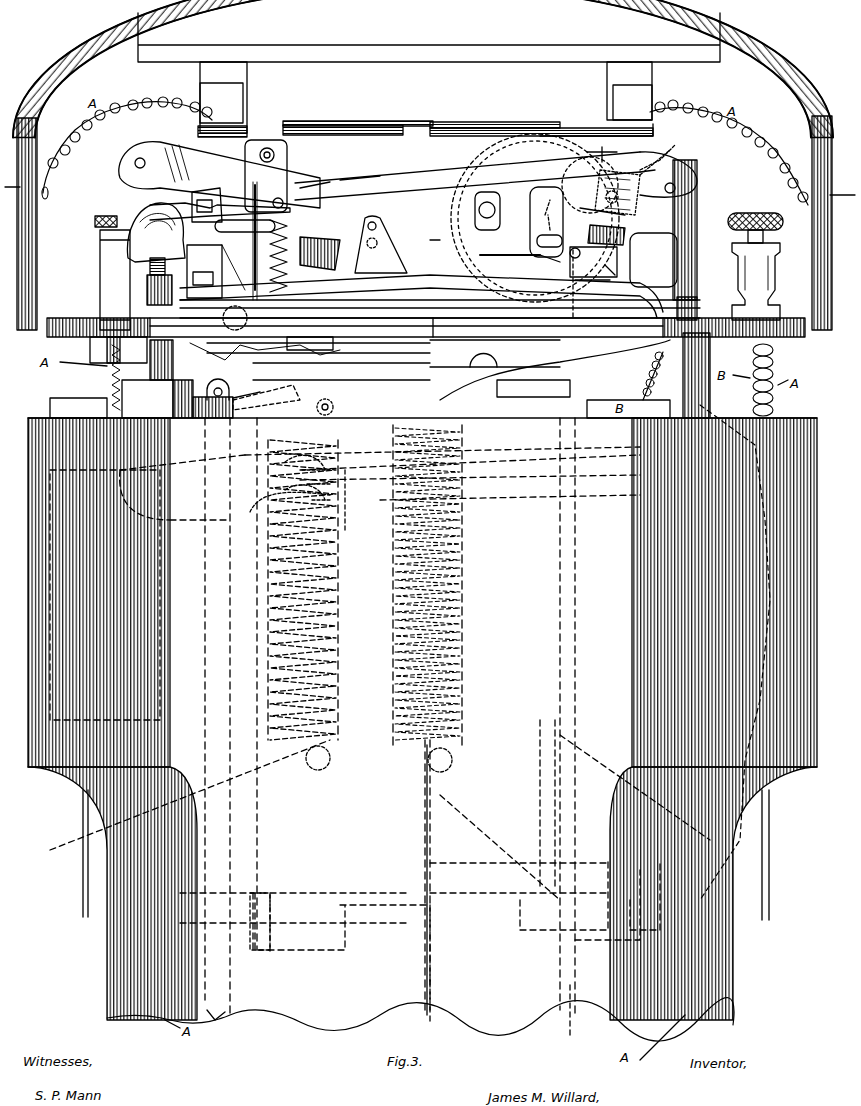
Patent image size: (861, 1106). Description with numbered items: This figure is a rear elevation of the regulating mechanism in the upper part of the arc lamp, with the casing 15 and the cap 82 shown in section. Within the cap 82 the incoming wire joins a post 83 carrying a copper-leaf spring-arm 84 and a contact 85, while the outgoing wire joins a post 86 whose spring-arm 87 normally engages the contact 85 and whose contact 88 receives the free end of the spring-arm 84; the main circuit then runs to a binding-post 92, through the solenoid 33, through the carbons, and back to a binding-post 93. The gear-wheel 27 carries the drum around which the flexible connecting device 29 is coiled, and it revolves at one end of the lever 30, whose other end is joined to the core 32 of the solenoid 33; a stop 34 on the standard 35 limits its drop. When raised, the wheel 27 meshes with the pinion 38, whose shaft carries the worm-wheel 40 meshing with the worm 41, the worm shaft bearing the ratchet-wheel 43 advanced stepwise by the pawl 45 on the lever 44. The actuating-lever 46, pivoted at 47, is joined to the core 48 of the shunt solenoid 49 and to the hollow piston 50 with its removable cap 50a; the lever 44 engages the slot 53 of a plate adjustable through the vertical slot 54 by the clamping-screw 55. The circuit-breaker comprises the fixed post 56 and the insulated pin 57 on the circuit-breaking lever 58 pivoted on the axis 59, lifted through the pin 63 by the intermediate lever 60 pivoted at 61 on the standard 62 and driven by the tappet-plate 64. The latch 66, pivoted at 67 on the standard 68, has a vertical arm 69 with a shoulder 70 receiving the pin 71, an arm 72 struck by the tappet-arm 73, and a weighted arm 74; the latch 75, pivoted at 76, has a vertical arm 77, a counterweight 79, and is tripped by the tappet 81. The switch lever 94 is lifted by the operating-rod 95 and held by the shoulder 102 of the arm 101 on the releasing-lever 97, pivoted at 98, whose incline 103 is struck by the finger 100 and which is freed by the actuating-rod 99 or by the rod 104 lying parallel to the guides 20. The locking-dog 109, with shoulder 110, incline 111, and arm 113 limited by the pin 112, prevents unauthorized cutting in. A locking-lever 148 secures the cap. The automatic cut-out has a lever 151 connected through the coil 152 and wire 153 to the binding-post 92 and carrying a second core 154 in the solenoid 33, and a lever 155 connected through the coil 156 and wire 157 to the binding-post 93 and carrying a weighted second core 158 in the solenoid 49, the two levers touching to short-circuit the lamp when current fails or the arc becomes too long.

The casing 15 is at (730, 960).
The vertical guides 20 is at (425, 990).
The gear-wheel 27 is at (452, 163).
The flexible connecting device 29 is at (433, 1028).
The lever 30 is at (345, 183).
The solenoid core 32 is at (118, 170).
The solenoid 33 is at (72, 408).
The stop 34 is at (285, 152).
The standard 35 is at (312, 184).
The pinion 38 is at (640, 165).
The worm-wheel 40 is at (650, 165).
The worm 41 is at (653, 260).
The ratchet-wheel 43 is at (593, 262).
The lever 44 is at (543, 262).
The pawl 45 is at (563, 172).
The actuating-lever 46 is at (690, 180).
The pivot 47 is at (381, 244).
The solenoid core 48 is at (697, 205).
The solenoid 49 is at (598, 400).
The piston 50 is at (162, 399).
The removable cap 50a is at (147, 399).
The slot 53 is at (537, 243).
The vertical slot 54 is at (500, 200).
The clamping-screw 55 is at (530, 218).
The fixed plate or post 56 is at (203, 286).
The insulated pin 57 is at (222, 262).
The circuit-breaking lever 58 is at (305, 256).
The axis 59 is at (378, 215).
The intermediate lever 60 is at (380, 182).
The pivot 61 is at (278, 200).
The standard 62 is at (281, 200).
The pin or arm 63 is at (439, 233).
The tappet-plate 64 is at (617, 192).
The latch 66 is at (606, 235).
The pivot 67 is at (570, 256).
The standard 68 is at (592, 273).
The vertical arm 69 is at (602, 212).
The shoulder 70 is at (609, 193).
The pin 71 is at (588, 152).
The latch arm 72 is at (505, 255).
The tappet-arm 73 is at (490, 233).
The weighted arm 74 is at (614, 263).
The latch 75 is at (245, 225).
The pivot 76 is at (233, 270).
The vertical arm 77 is at (252, 192).
The counterweight 79 is at (252, 300).
The tappet 81 is at (222, 230).
The cap 82 is at (125, 25).
The block or post 83 is at (222, 117).
The spring-arm 84 is at (270, 127).
The contact 85 is at (328, 122).
The post 86 is at (606, 120).
The spring-arm 87 is at (580, 130).
The contact 88 is at (553, 120).
The binding-post 92 is at (100, 214).
The binding-post 93 is at (758, 210).
The lever 94 is at (185, 522).
The operating-rod 95 is at (82, 815).
The releasing-lever 97 is at (600, 482).
The pivot 98 is at (335, 405).
The actuating-rod 99 is at (770, 808).
The finger 100 is at (340, 535).
The arm 101 is at (330, 470).
The shoulder 102 is at (330, 482).
The incline 103 is at (330, 500).
The rod or bar 104 is at (235, 1022).
The locking-dog 109 is at (285, 466).
The shoulder 110 is at (285, 492).
The incline 111 is at (285, 509).
The pin 112 is at (249, 404).
The arm 113 is at (266, 398).
The locking-lever 148 is at (445, 327).
The lever 151 is at (240, 897).
The coil 152 is at (338, 572).
The wire 153 is at (222, 383).
The second core 154 is at (220, 780).
The lever 155 is at (466, 895).
The coil 156 is at (465, 562).
The wire 157 is at (550, 390).
The second core 158 is at (630, 790).